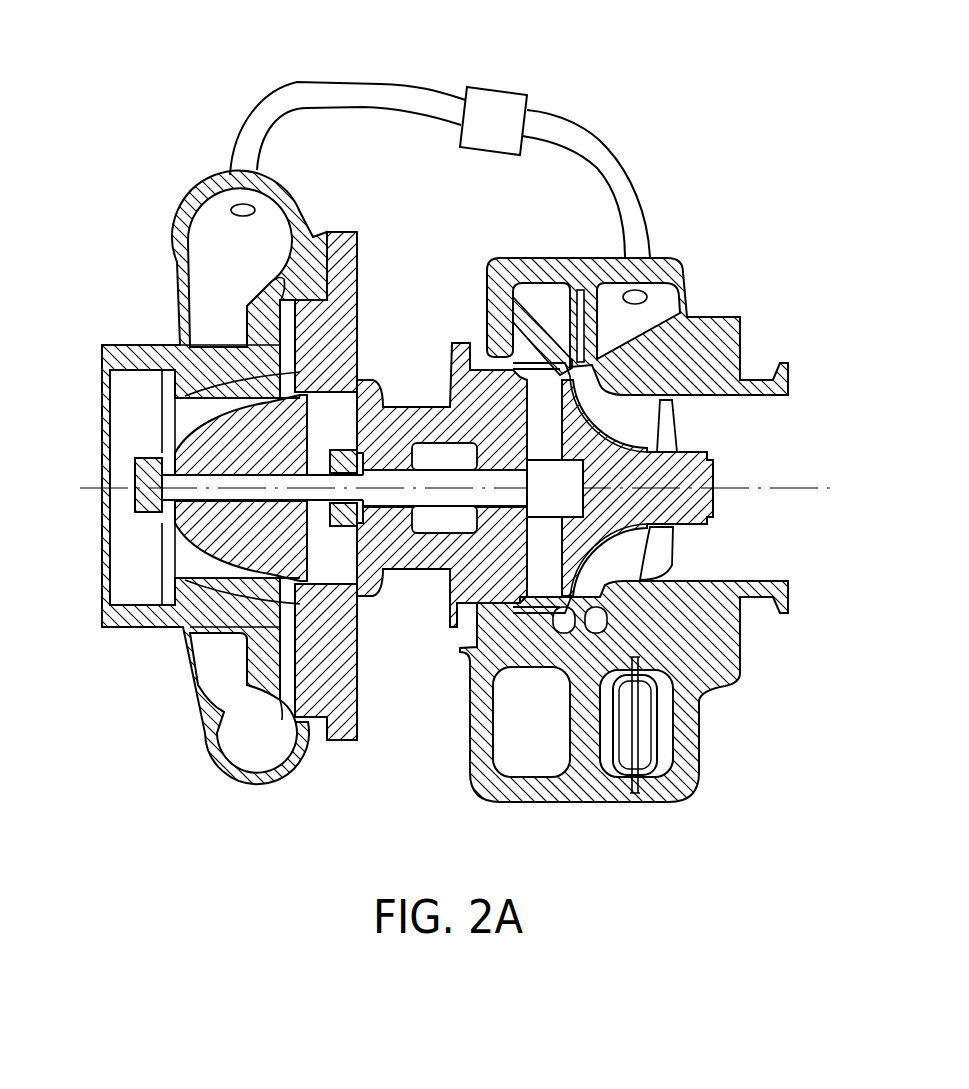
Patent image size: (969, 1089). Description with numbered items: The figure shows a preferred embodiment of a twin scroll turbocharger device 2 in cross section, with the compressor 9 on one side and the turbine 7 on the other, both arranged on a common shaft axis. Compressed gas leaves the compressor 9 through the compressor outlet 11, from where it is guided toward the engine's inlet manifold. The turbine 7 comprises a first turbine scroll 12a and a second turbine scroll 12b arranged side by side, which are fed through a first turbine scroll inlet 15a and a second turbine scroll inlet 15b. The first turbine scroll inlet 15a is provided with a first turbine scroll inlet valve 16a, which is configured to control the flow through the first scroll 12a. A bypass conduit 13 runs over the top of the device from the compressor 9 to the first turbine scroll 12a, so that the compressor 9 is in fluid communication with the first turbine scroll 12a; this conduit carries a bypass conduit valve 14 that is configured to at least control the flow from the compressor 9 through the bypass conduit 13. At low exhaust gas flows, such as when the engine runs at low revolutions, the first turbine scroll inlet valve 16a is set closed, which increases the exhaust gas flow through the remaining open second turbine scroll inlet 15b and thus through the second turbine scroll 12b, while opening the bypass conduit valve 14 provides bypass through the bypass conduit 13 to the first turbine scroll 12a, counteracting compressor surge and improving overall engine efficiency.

The twin scroll turbocharger device 2 is at (484, 544).
The turbine 7 is at (484, 544).
The compressor 9 is at (484, 544).
The compressor outlet 11 is at (158, 183).
The first turbine scroll 12a is at (637, 318).
The second turbine scroll 12b is at (538, 303).
The bypass conduit 13 is at (588, 140).
The bypass conduit valve 14 is at (505, 87).
The first turbine scroll inlet 15a is at (667, 727).
The second turbine scroll inlet 15b is at (512, 727).
The first turbine scroll inlet valve 16a is at (645, 747).